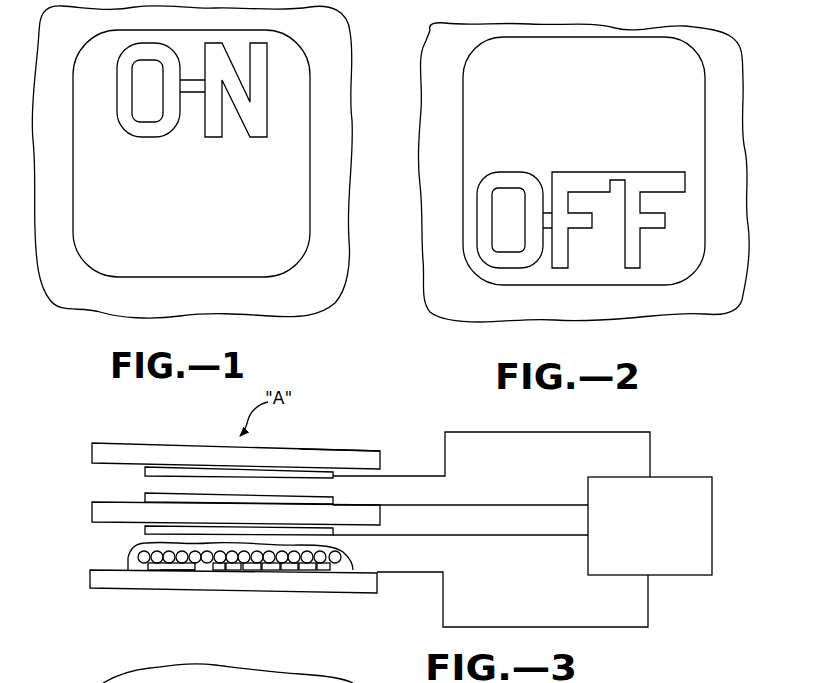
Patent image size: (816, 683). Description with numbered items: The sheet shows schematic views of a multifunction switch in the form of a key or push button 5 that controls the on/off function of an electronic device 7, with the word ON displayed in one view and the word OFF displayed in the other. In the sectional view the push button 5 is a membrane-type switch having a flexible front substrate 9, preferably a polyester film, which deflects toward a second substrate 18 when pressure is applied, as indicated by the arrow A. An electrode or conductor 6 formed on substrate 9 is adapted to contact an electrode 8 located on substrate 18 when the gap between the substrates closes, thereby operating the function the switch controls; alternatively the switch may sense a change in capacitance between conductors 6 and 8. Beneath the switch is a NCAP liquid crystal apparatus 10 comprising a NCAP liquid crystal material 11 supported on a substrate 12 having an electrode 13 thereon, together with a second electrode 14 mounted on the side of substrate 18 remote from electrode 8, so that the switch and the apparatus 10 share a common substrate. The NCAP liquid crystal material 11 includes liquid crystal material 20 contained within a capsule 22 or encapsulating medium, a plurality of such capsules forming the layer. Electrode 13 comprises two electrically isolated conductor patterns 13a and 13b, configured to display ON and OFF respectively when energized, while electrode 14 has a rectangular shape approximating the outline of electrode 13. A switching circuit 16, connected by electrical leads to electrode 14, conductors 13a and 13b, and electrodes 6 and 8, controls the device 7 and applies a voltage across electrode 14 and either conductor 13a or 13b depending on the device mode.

In FIG. 1, the key or push button 5 is at (245, 275).
In FIG. 2, the key or push button 5 is at (516, 282).
In FIG. 3, the key or push button 5 is at (104, 455).
In FIG. 1, the electronic device 7 is at (311, 296).
In FIG. 2, the electronic device 7 is at (688, 300).
In FIG. 1, the conductor 13a is at (260, 62).
In FIG. 2, the conductor 13b is at (633, 262).
In FIG. 3, the flexible front substrate 9 is at (328, 460).
In FIG. 3, the electrode or conductor 6 is at (140, 468).
In FIG. 3, the electrode 8 is at (150, 495).
In FIG. 3, the second substrate 18 is at (100, 511).
In FIG. 3, the second electrode 14 is at (155, 528).
In FIG. 3, the NCAP liquid crystal material 11 is at (133, 555).
In FIG. 3, the NCAP liquid crystal apparatus 10 is at (191, 525).
In FIG. 3, the substrate 12 is at (95, 578).
In FIG. 3, the liquid crystal material 20 is at (143, 570).
In FIG. 3, the capsule 22 is at (162, 568).
In FIG. 3, the electrode 13 is at (256, 568).
In FIG. 3, the switching circuit 16 is at (687, 568).